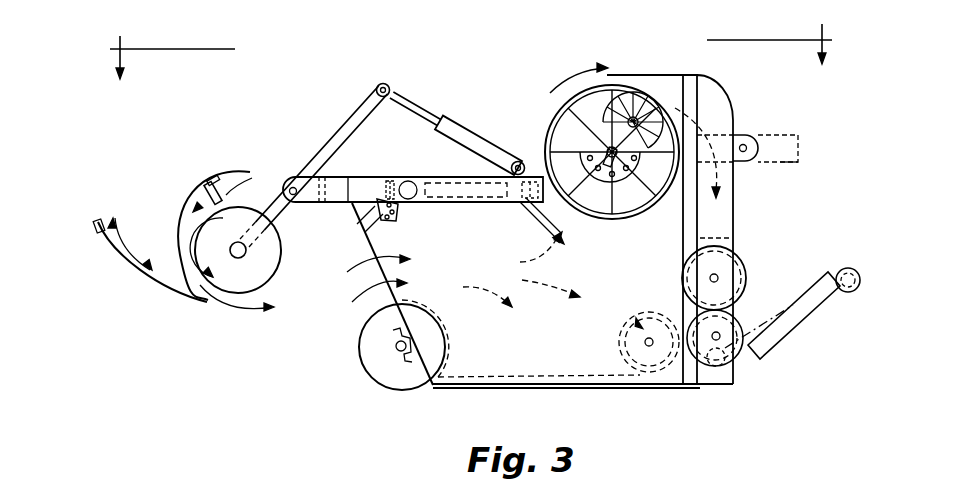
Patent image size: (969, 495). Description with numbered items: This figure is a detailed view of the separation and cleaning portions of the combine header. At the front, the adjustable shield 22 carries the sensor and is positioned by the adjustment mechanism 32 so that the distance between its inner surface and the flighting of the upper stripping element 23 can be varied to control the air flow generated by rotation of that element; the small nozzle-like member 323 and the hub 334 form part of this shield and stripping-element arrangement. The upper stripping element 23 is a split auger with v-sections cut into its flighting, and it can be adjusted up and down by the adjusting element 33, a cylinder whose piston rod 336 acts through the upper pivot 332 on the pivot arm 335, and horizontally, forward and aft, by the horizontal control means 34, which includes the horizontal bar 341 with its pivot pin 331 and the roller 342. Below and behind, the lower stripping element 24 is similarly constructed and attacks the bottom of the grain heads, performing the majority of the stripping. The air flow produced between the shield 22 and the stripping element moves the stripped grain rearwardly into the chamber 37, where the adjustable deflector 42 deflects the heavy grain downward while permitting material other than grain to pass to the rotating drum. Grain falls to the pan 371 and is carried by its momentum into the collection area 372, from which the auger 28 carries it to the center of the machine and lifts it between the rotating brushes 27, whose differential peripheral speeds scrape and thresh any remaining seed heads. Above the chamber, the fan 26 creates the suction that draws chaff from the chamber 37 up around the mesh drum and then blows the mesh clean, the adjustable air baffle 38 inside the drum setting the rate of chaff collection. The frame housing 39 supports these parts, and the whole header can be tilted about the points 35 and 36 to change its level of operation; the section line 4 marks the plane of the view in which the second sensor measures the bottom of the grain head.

The section line 4- 4 is at (471, 41).
The adjustable shield 22 is at (172, 300).
The upper stripping element 23 is at (283, 275).
The lower stripping element 24 is at (368, 376).
The fan 26 is at (652, 107).
The rotating brushes 27 is at (750, 276).
The auger 28 is at (619, 343).
The adjustment mechanism 32 is at (213, 180).
The nozzle 323 is at (205, 183).
The adjusting element 33 is at (468, 128).
The pivot pin 331 is at (290, 187).
The upper pivot 332 is at (383, 84).
The wheel hub 334 is at (247, 251).
The pivot arm 335 is at (352, 116).
The piston rod 336 is at (420, 107).
The horizontal control means 34 is at (463, 205).
The horizontal bar 341 is at (350, 176).
The roller on bar 342 is at (406, 178).
The pivot point 35 is at (717, 385).
The pivot point 36 is at (750, 142).
The chamber 37 is at (546, 322).
The pan 371 is at (512, 390).
The collection area 372 is at (662, 390).
The air baffle 38 is at (598, 66).
The frame housing 39 is at (730, 108).
The adjustable deflector 42 is at (527, 247).